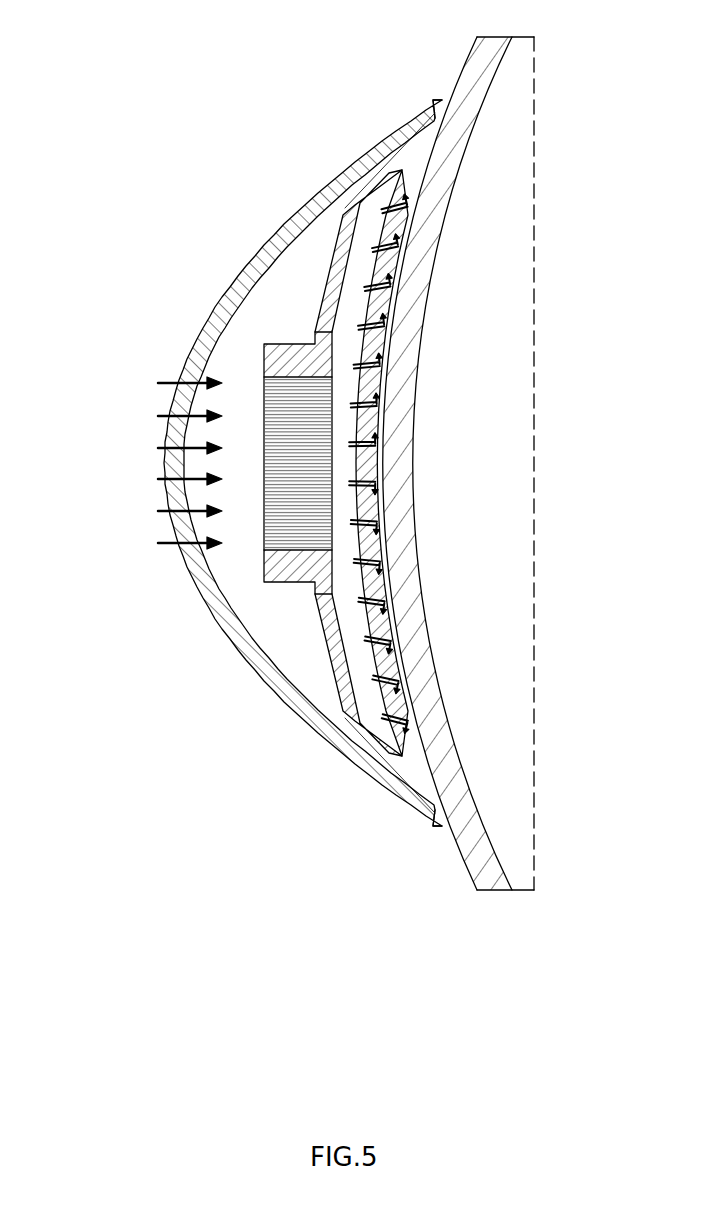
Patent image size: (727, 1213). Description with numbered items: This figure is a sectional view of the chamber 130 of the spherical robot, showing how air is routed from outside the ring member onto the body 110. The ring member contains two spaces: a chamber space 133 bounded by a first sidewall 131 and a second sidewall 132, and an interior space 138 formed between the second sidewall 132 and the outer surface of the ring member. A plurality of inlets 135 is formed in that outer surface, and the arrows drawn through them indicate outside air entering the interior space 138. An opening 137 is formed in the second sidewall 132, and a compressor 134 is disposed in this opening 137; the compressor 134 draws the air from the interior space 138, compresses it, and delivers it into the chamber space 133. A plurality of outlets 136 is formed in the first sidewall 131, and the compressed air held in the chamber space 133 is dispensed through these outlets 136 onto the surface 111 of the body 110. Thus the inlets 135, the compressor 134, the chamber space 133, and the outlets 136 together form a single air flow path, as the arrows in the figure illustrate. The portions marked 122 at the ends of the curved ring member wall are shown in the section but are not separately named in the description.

The body 110 is at (490, 103).
The surface 111 is at (396, 334).
The end portion 122 is at (436, 99).
The unit body 130 is at (131, 45).
The first sidewall 131 is at (333, 236).
The second sidewall 132 is at (366, 418).
The chamber space 133 is at (385, 701).
The compressor 134 is at (262, 543).
The inlets 135 is at (158, 448).
The outlets 136 is at (384, 285).
The opening 137 is at (265, 566).
The interior space 138 is at (300, 631).